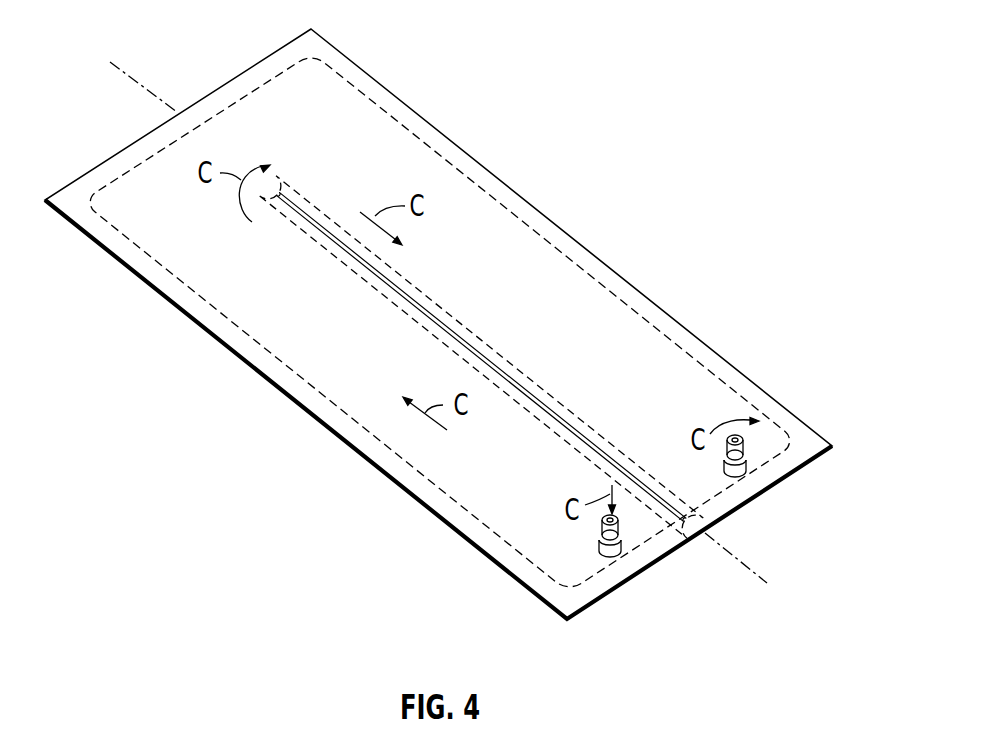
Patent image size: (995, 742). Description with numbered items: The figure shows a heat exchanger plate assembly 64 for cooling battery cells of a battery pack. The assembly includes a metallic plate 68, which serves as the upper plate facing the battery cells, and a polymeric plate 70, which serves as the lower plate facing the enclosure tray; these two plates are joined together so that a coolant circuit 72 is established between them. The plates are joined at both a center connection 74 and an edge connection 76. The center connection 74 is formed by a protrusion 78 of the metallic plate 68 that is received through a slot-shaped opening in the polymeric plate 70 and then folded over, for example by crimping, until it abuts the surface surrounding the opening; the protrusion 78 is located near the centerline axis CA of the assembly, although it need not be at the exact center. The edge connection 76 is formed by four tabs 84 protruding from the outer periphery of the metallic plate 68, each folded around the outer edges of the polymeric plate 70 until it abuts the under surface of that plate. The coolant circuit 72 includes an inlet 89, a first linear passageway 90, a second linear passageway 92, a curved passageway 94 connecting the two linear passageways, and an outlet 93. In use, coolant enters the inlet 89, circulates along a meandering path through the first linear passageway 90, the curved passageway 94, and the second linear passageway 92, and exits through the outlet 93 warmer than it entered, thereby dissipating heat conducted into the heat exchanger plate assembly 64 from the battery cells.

The heat exchanger plate assembly 64 is at (609, 249).
The metallic plate 68 is at (781, 426).
The polymeric plate 70 is at (780, 487).
The coolant circuit 72 is at (695, 387).
The center connection 74 is at (430, 300).
The edge connection 76 is at (566, 628).
The protrusion 78 is at (504, 358).
The tabs 84 is at (140, 138).
The inlet 89 is at (619, 533).
The first linear passageway 90 is at (363, 404).
The second linear passageway 92 is at (507, 240).
The outlet 93 is at (790, 440).
The curved passageway 94 is at (337, 115).
The centerline axis CA is at (749, 571).